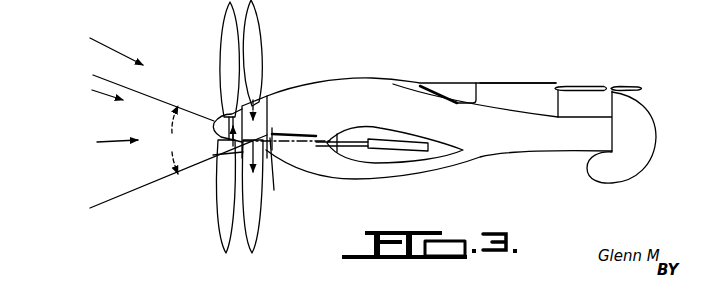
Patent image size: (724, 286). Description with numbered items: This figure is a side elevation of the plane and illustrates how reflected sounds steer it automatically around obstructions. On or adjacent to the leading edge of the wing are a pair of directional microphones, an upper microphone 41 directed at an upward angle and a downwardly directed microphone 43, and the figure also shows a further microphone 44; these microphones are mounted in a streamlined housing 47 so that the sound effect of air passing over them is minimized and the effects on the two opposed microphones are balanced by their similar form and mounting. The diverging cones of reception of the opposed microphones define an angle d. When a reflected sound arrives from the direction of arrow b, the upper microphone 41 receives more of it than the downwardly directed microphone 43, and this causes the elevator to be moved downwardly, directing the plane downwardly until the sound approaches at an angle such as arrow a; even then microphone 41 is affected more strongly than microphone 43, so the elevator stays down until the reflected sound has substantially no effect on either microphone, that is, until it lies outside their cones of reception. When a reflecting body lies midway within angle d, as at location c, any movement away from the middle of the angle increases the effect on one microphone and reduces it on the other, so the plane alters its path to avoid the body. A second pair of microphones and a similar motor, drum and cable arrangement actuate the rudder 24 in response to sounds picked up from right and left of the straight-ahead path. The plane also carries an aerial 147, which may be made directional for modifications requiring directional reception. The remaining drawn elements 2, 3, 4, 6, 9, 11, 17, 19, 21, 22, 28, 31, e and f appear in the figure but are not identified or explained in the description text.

The front propeller blade 2 is at (226, 22).
The rear propeller blade 3 is at (260, 21).
The blade pitch adjustment arrows 4 is at (244, 150).
The fuselage nacelle 6 is at (345, 82).
The engine pod fairing 9 is at (361, 128).
The drive shaft 11 is at (421, 150).
The air inlet 17 is at (418, 87).
The air duct flap 19 is at (450, 87).
The aerial 147 is at (510, 83).
The shaft coupling 21 is at (333, 154).
The rear fuselage compartment 22 is at (563, 108).
The rudder 24 is at (647, 135).
The horizontal stabilizer 28 is at (582, 87).
The elevator 31 is at (634, 87).
The upper microphone 41 is at (272, 137).
The downwardly directed microphone 43 is at (283, 170).
The microphone 44 is at (213, 158).
The streamlined housing 47 is at (311, 138).
The arrow a is at (114, 50).
The arrow b is at (92, 91).
The location c is at (112, 141).
The angle d is at (173, 140).
The reference line e is at (159, 99).
The reference line f is at (136, 190).